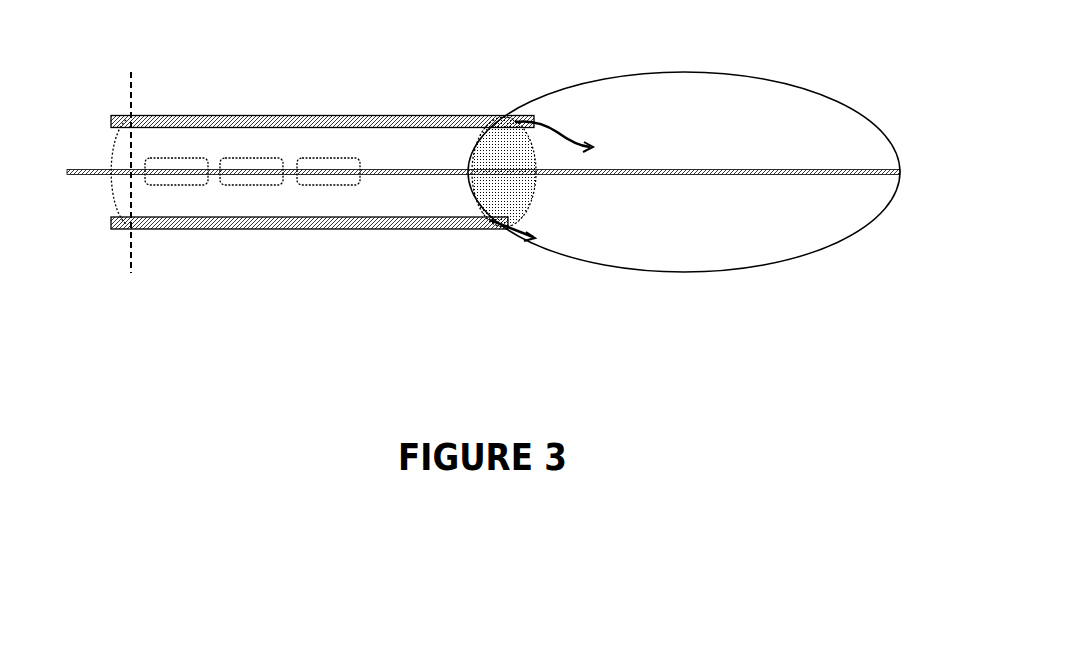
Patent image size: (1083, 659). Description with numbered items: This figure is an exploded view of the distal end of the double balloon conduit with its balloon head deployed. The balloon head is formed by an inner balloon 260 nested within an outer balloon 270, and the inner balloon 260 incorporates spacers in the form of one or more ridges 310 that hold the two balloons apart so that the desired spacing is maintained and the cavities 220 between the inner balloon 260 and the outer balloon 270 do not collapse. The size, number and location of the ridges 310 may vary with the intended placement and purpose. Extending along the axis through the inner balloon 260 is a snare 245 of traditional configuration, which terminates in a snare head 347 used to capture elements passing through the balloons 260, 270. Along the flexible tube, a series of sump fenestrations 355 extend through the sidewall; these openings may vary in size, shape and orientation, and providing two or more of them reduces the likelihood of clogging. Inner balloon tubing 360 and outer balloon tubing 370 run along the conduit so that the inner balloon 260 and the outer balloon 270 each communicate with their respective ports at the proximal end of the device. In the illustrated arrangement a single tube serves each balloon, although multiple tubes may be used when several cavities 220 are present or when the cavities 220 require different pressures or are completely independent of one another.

The cavities 220 is at (728, 267).
The snare 245 is at (85, 165).
The inner balloon 260 is at (747, 227).
The outer balloon 270 is at (760, 77).
The ridges 310 is at (670, 268).
The snare head 347 is at (640, 176).
The sump fenestrations 355 is at (262, 181).
The inner balloon tubing 360 is at (460, 122).
The outer balloon tubing 370 is at (356, 229).